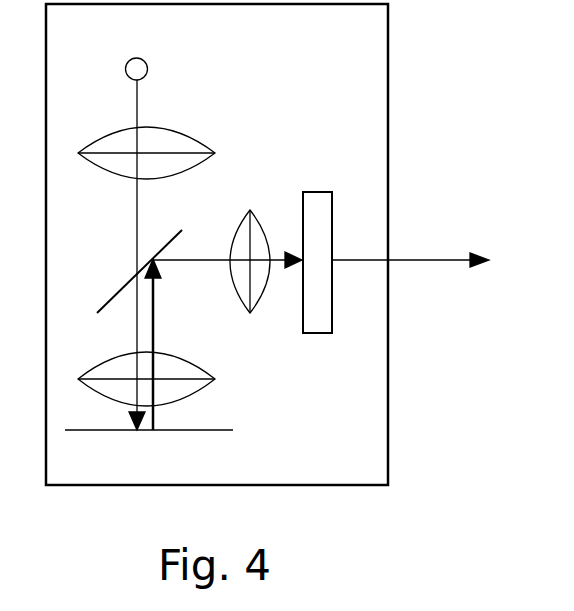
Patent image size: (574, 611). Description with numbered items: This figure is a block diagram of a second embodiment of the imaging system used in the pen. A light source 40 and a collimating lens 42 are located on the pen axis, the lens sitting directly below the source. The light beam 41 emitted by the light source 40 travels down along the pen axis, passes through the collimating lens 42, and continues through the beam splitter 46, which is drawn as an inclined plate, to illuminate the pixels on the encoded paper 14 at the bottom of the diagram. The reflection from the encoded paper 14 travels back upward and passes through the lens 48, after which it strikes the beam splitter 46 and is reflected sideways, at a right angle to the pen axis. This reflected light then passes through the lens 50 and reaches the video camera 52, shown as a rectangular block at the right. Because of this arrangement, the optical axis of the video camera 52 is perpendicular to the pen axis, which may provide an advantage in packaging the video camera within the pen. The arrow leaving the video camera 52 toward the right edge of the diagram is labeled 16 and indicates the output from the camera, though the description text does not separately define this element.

The encoded paper 14 is at (213, 428).
The output beam 16 is at (449, 261).
The light source 40 is at (127, 62).
The light beam 41 is at (136, 213).
The collimating lens 42 is at (188, 134).
The beam splitter 46 is at (113, 295).
The lens 48 is at (188, 360).
The lens 50 is at (240, 218).
The video camera 52 is at (316, 191).